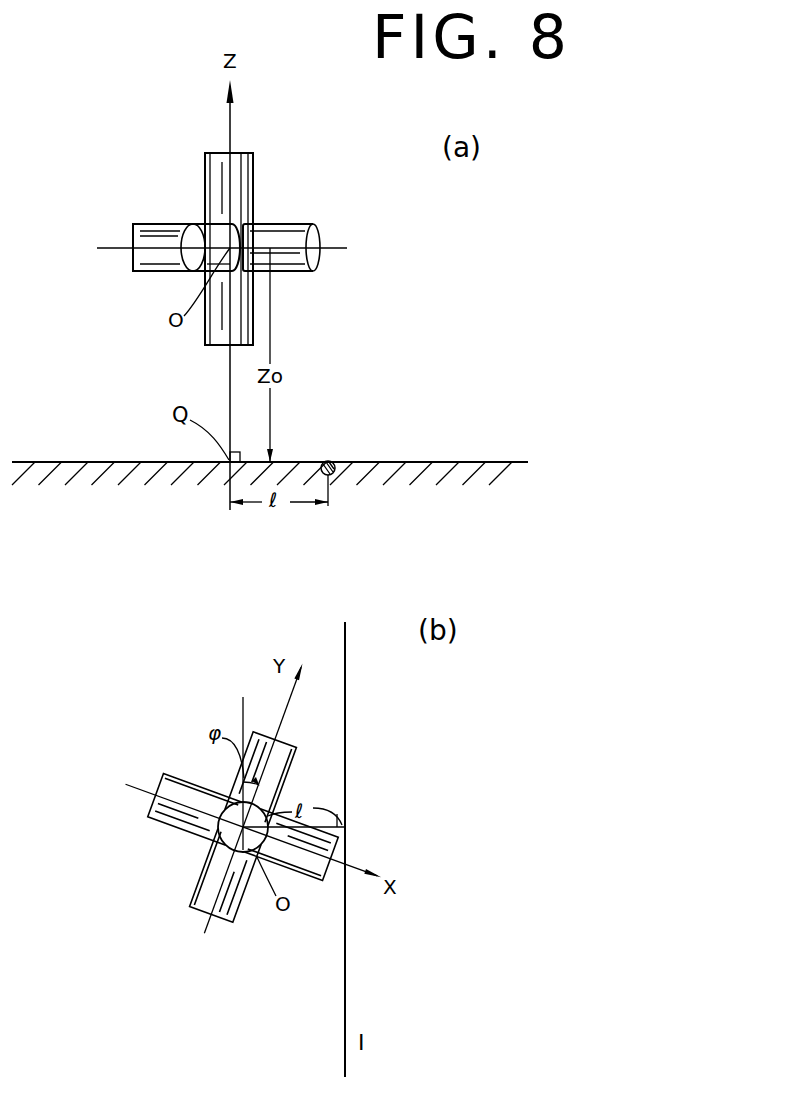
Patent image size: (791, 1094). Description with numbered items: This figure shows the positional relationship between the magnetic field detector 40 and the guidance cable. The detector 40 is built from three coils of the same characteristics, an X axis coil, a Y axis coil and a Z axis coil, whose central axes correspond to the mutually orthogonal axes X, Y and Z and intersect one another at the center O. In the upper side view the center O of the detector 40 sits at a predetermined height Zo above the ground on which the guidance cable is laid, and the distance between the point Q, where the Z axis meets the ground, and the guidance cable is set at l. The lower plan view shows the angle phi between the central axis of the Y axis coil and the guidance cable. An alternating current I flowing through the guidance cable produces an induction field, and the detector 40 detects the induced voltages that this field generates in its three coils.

The magnetic field detector 40 is at (228, 232).